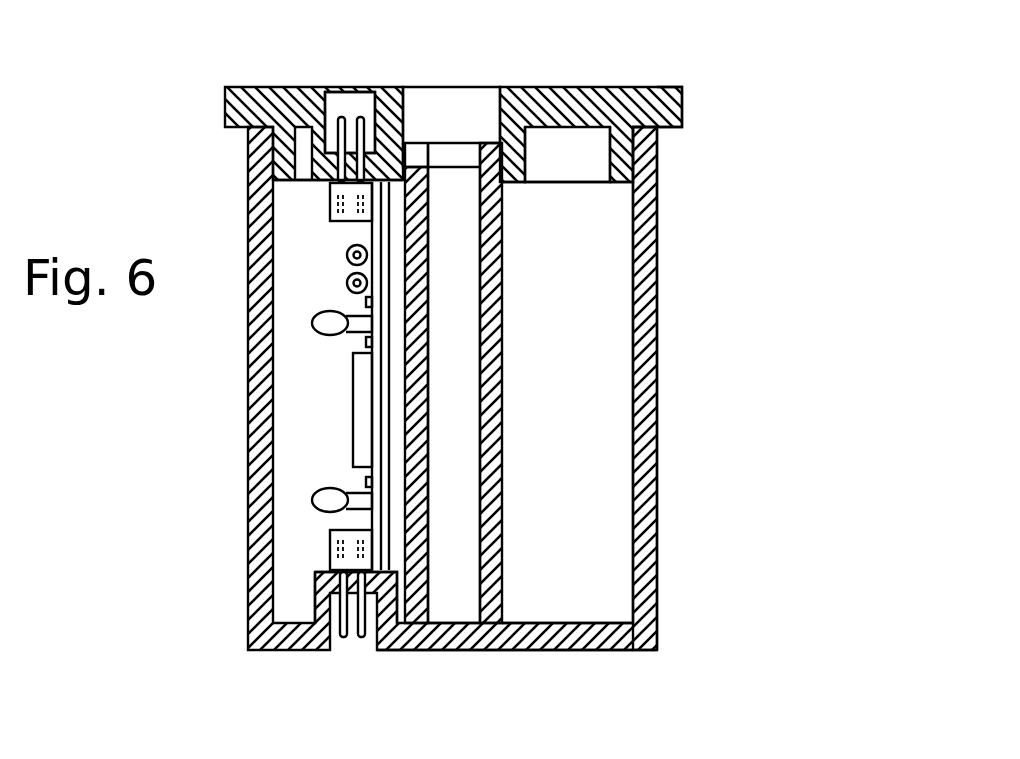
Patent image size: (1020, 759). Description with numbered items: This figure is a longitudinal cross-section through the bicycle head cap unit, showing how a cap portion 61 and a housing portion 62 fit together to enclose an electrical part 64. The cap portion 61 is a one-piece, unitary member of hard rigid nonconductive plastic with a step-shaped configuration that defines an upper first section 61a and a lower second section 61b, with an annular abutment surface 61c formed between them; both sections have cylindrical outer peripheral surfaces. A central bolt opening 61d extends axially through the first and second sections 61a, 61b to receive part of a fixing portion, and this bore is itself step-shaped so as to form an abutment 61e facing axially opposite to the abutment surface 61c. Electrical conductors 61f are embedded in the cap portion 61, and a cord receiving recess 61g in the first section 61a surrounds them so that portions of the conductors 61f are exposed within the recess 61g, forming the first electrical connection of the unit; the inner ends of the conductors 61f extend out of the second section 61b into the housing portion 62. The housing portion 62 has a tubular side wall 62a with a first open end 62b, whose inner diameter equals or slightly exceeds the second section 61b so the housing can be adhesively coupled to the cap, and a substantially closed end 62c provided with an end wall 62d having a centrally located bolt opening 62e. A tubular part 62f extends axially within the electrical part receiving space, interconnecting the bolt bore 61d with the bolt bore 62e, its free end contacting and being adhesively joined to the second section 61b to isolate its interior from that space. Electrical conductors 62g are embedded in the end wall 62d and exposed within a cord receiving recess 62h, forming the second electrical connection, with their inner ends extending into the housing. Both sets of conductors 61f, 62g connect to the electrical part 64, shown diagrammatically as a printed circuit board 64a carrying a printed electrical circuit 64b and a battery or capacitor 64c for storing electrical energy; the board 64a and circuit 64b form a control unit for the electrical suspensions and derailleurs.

The cap portion 61 is at (226, 103).
The first section 61a is at (682, 107).
The second section 61b is at (658, 152).
The annular abutment surface 61c is at (674, 128).
The bolt opening 61d is at (467, 114).
The abutment 61e is at (413, 137).
The electrical conductors 61f is at (338, 116).
The cord receiving recess 61g is at (362, 112).
The housing portion 62 is at (247, 462).
The tubular side wall 62a is at (660, 393).
The first open end 62b is at (647, 95).
The closed end 62c is at (633, 652).
The end wall 62d is at (567, 652).
The bolt opening 62e is at (474, 637).
The tubular part 62f is at (505, 435).
The electrical conductors 62g is at (364, 650).
The cord receiving recess 62h is at (337, 650).
The electrical part 64 is at (371, 235).
The printed circuit board 64a is at (353, 518).
The electrical circuit 64b is at (352, 341).
The battery or capacitor 64c is at (353, 415).